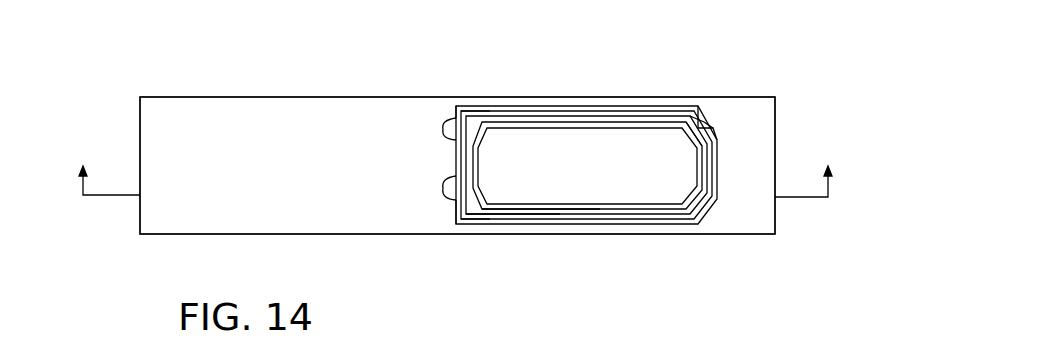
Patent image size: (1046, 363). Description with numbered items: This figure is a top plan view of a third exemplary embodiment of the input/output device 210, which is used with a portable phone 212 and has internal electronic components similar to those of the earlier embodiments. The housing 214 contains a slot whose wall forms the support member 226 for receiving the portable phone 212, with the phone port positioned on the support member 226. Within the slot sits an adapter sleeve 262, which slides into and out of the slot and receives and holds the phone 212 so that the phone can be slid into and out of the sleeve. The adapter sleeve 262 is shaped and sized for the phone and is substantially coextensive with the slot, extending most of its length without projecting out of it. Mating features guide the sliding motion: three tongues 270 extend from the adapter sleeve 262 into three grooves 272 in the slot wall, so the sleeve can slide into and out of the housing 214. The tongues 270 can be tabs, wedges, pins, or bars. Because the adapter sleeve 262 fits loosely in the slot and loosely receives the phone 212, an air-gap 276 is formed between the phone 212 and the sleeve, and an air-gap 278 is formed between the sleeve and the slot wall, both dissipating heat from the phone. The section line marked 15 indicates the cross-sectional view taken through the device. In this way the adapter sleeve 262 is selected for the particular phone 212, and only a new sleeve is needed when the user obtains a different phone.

The input/output device 210 is at (237, 97).
The housing 214 is at (323, 110).
The portable phone 212 is at (550, 122).
The support member 226 is at (460, 144).
The tongues 270 is at (440, 117).
The grooves 272 is at (489, 107).
The adapter sleeve 262 is at (688, 123).
The air-gap 276 is at (510, 222).
The air-gap 278 is at (553, 212).
The section line 15- 15 is at (460, 172).